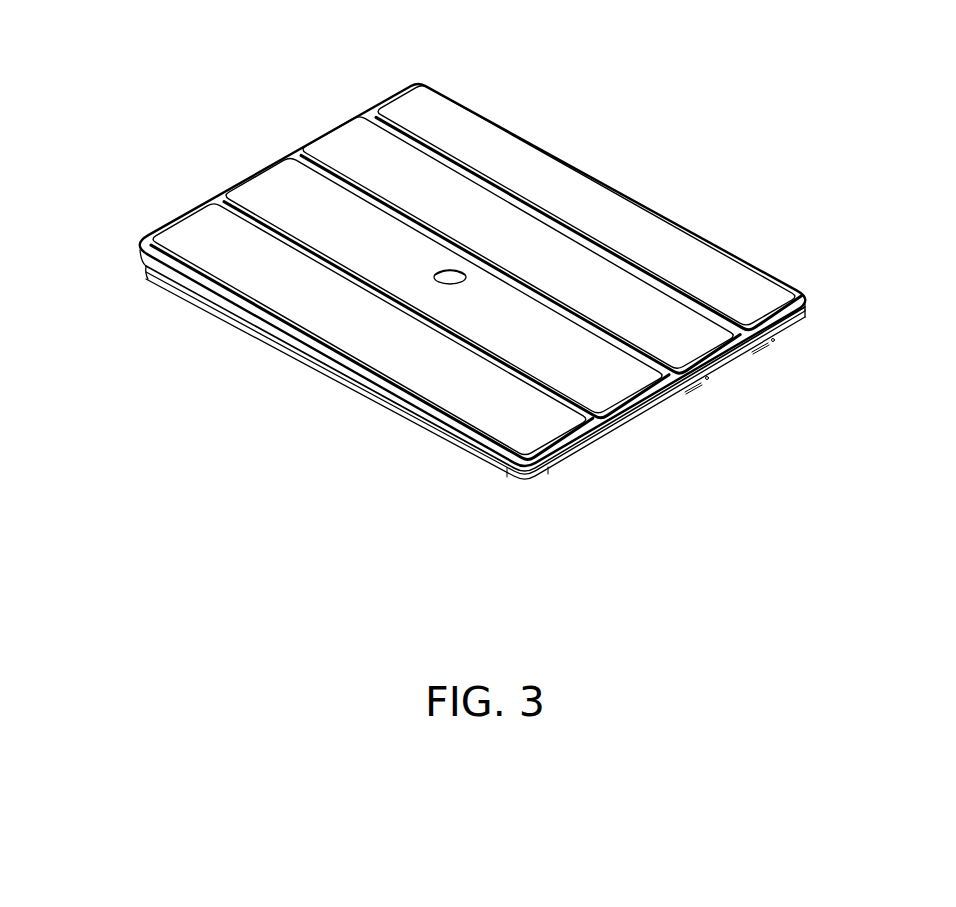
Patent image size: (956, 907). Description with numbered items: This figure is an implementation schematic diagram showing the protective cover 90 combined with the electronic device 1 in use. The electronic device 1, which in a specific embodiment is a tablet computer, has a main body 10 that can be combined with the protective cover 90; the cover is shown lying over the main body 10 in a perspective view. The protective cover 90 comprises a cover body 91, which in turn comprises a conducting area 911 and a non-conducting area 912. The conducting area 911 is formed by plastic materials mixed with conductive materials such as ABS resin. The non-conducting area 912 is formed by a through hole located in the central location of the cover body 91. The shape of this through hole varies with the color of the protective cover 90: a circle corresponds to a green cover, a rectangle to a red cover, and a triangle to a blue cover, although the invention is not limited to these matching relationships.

The electronic device 1 is at (426, 300).
The main body 10 is at (390, 416).
The protective cover 90 is at (426, 261).
The cover body 91 is at (148, 272).
The conducting area 911 is at (262, 188).
The non-conducting area 912 is at (441, 270).